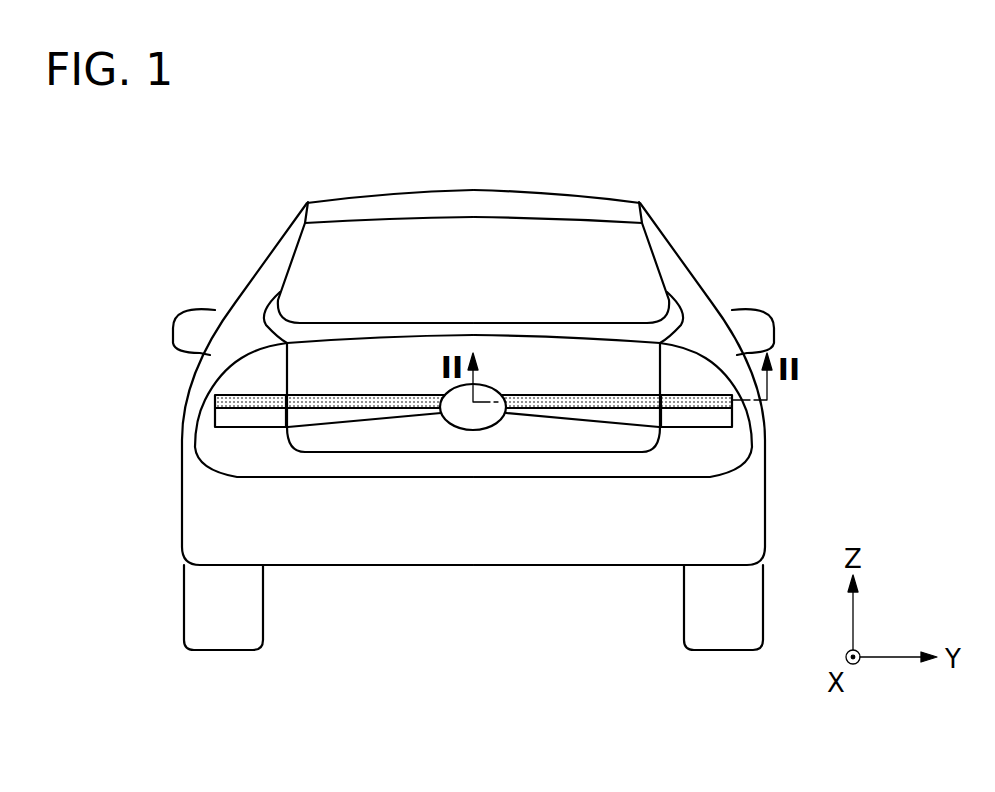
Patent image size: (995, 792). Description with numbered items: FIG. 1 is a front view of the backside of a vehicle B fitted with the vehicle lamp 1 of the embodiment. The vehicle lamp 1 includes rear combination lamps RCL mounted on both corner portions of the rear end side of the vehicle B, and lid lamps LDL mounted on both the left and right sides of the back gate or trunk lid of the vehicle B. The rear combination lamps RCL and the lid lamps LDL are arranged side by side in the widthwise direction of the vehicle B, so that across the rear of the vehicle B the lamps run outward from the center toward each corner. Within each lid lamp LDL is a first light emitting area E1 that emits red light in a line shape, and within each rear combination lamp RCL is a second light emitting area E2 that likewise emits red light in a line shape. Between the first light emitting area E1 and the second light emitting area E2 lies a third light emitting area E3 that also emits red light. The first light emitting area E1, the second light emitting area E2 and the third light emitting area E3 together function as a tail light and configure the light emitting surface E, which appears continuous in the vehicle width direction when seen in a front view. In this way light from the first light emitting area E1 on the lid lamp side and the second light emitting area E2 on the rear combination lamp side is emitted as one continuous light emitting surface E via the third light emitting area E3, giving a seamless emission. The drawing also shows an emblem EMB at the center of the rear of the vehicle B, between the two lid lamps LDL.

The vehicle B is at (473, 190).
The vehicle lamp 1 is at (223, 242).
The rear combination lamp RCL is at (250, 394).
The lid lamp LDL is at (352, 394).
The light emitting surface E is at (210, 505).
The first light emitting area E1 is at (358, 408).
The second light emitting area E2 is at (248, 410).
The third light emitting area E3 is at (287, 428).
The emblem EMB is at (472, 430).